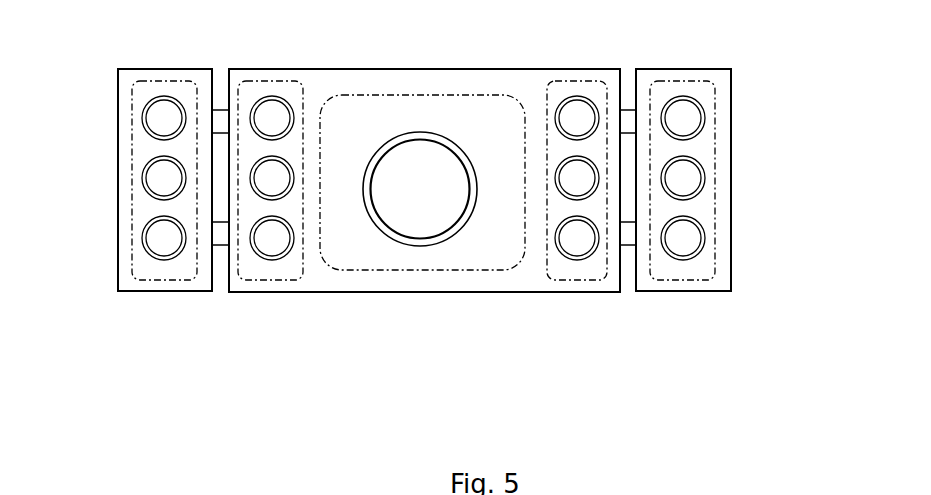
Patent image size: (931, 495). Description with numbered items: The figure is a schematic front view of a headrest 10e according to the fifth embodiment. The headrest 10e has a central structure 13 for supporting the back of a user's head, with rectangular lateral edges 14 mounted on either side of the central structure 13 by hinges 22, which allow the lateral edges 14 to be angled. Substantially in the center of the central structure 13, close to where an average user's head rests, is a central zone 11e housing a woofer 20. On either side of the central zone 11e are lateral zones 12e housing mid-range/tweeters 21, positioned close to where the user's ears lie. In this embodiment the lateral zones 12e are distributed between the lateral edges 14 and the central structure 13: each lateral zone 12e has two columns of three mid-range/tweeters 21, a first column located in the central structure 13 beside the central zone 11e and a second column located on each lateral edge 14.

The headrest 10e is at (439, 204).
The central zone 11e is at (422, 244).
The lateral zones 12e is at (186, 223).
The central structure 13 is at (424, 236).
The lateral edges 14 is at (731, 130).
The woofer 20 is at (425, 210).
The mid-range/tweeter 21 is at (153, 182).
The hinges 22 is at (222, 120).